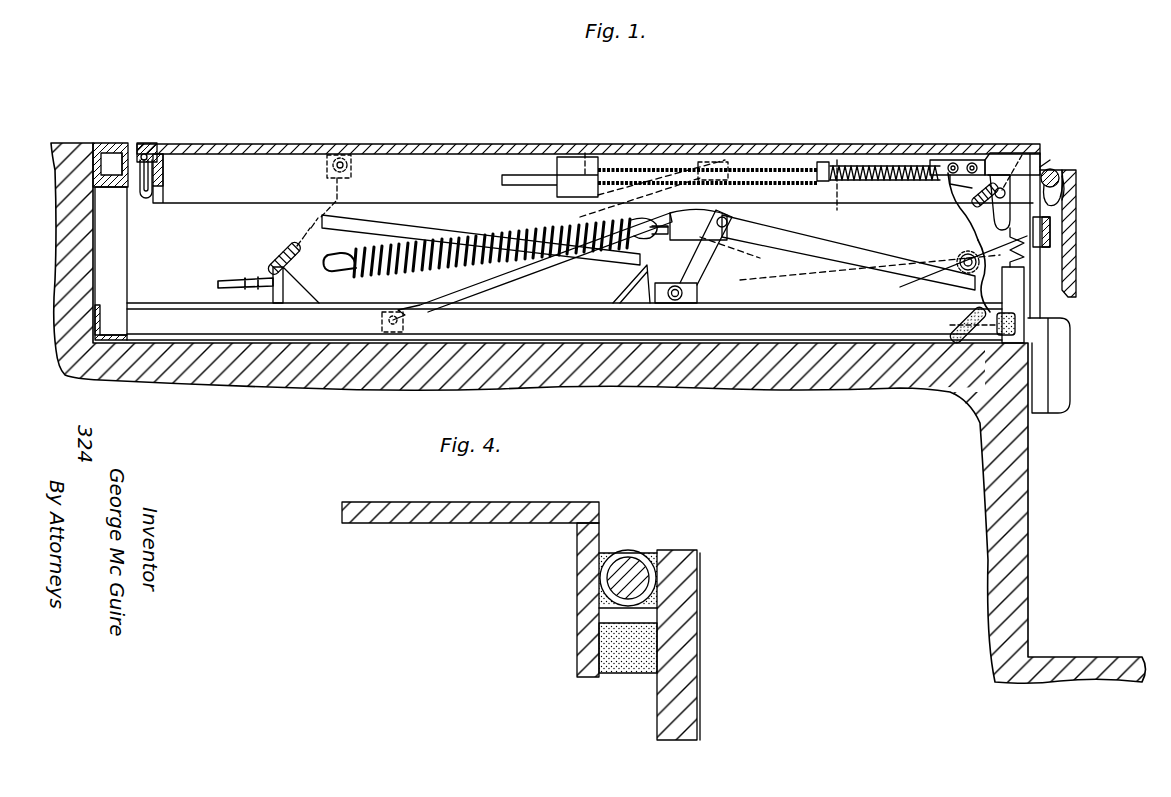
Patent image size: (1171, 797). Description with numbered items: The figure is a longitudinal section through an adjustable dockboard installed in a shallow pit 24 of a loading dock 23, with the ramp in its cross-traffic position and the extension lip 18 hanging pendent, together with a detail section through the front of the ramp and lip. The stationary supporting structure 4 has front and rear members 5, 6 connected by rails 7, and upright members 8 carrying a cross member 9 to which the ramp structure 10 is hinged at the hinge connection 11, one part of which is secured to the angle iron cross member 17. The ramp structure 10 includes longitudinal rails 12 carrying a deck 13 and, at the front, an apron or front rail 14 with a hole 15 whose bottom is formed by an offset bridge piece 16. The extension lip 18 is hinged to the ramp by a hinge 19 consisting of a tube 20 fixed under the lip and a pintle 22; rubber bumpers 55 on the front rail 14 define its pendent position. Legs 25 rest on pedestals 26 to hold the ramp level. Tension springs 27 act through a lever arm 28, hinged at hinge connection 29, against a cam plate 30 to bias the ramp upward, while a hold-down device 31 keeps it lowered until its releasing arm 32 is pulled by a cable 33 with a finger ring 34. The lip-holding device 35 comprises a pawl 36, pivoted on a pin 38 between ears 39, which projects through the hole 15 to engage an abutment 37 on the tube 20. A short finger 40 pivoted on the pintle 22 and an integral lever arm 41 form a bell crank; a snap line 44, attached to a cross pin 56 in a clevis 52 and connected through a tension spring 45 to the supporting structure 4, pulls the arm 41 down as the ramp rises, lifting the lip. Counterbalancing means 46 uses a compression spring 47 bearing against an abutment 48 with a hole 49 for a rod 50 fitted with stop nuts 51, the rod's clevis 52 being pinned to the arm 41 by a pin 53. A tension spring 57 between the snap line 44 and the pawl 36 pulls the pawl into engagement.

In FIG. 1, the stationary mounting or supporting structure 4 is at (76, 120).
In FIG. 1, the front member 5 is at (1050, 325).
In FIG. 1, the rear member 6 is at (110, 312).
In FIG. 1, the rail 7 is at (196, 315).
In FIG. 1, the upright member 8 is at (128, 233).
In FIG. 1, the cross member 9 is at (124, 143).
In FIG. 1, the ramp structure 10 is at (421, 127).
In FIG. 1, the hinge connection 11 is at (150, 143).
In FIG. 1, the longitudinal rail 12 is at (470, 175).
In FIG. 1, the deck 13 is at (535, 144).
In FIG. 4, the deck 13 is at (410, 500).
In FIG. 1, the apron or front rail 14 is at (1040, 165).
In FIG. 4, the apron or front rail 14 is at (600, 532).
In FIG. 1, the hole 15 is at (1051, 213).
In FIG. 1, the bridge piece 16 is at (1052, 236).
In FIG. 1, the angle iron cross member 17 is at (165, 173).
In FIG. 1, the extension lip 18 is at (1080, 265).
In FIG. 4, the extension lip 18 is at (700, 596).
In FIG. 1, the hinge 19 is at (1058, 172).
In FIG. 1, the tube 20 is at (1055, 170).
In FIG. 4, the tube 20 is at (640, 553).
In FIG. 1, the hinge pin or pintle 22 is at (1062, 177).
In FIG. 4, the hinge pin or pintle 22 is at (612, 578).
In FIG. 1, the loading dock 23 is at (98, 143).
In FIG. 1, the pit 24 is at (556, 340).
In FIG. 1, the leg 25 is at (1022, 262).
In FIG. 1, the pedestal 26 is at (1012, 303).
In FIG. 1, the tension spring 27 is at (494, 228).
In FIG. 1, the lever arm 28 is at (818, 272).
In FIG. 1, the hinge connection 29 is at (673, 286).
In FIG. 1, the cam plate 30 is at (897, 244).
In FIG. 1, the hold-down device 31 is at (533, 213).
In FIG. 1, the releasing arm 32 is at (368, 225).
In FIG. 1, the releasing cable or cord 33 is at (300, 232).
In FIG. 1, the finger ring 34 is at (328, 150).
In FIG. 1, the lip-holding or supporting device 35 is at (984, 231).
In FIG. 1, the pawl or latch 36 is at (980, 243).
In FIG. 1, the abutment 37 is at (1025, 155).
In FIG. 1, the pin 38 is at (1006, 198).
In FIG. 1, the ear 39 is at (965, 188).
In FIG. 1, the lever arm or finger 40 is at (1066, 192).
In FIG. 1, the lever arm 41 is at (992, 153).
In FIG. 1, the snap line 44 is at (985, 290).
In FIG. 1, the tension spring 45 is at (950, 326).
In FIG. 1, the counterbalancing means 46 is at (664, 154).
In FIG. 1, the compression spring 47 is at (765, 164).
In FIG. 1, the abutment 48 is at (598, 160).
In FIG. 1, the hole 49 is at (588, 153).
In FIG. 1, the rod 50 is at (697, 170).
In FIG. 1, the stop nuts 51 is at (823, 162).
In FIG. 1, the clevis 52 is at (936, 160).
In FIG. 1, the pin 53 is at (972, 163).
In FIG. 4, the rubber bumper 55 is at (630, 676).
In FIG. 1, the cross pin 56 is at (953, 163).
In FIG. 1, the tension spring 57 is at (968, 205).